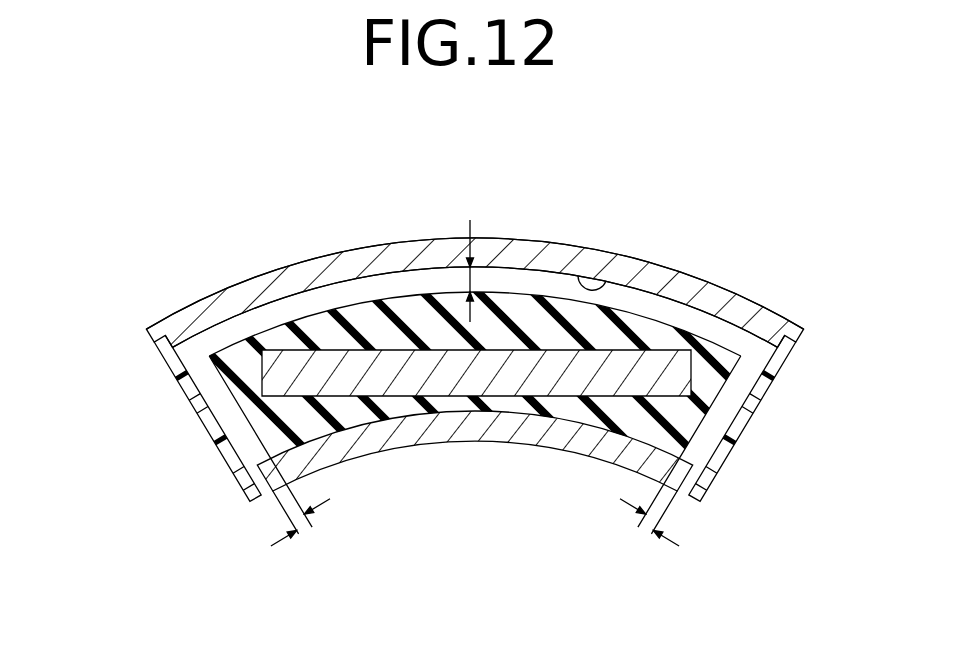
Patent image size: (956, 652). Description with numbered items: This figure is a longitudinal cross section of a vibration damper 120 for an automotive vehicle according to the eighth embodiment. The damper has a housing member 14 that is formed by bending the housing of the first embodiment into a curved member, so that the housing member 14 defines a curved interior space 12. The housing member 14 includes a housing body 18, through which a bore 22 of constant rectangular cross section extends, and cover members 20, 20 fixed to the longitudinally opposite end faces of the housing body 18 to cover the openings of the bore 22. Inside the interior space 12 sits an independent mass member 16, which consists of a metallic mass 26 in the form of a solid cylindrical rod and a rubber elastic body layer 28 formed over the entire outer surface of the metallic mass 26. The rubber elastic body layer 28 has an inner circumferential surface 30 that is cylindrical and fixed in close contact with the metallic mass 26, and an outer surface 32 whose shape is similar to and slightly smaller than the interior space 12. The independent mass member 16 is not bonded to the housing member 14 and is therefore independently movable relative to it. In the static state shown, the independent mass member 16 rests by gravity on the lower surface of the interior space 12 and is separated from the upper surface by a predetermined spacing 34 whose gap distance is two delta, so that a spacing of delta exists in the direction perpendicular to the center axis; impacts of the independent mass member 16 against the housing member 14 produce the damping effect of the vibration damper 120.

The vibration damper 120 is at (643, 185).
The interior space 12 is at (255, 313).
The housing member 14 is at (565, 238).
The bore 22 is at (618, 264).
The rubber elastic body layer 28 is at (326, 327).
The outer surface 32 is at (518, 278).
The independent mass member 16 is at (655, 318).
The inner circumferential surface 30 is at (344, 348).
The metallic mass 26 is at (676, 380).
The housing body 18 is at (565, 428).
The cover members 20 is at (198, 388).
The spacing 34 is at (738, 440).